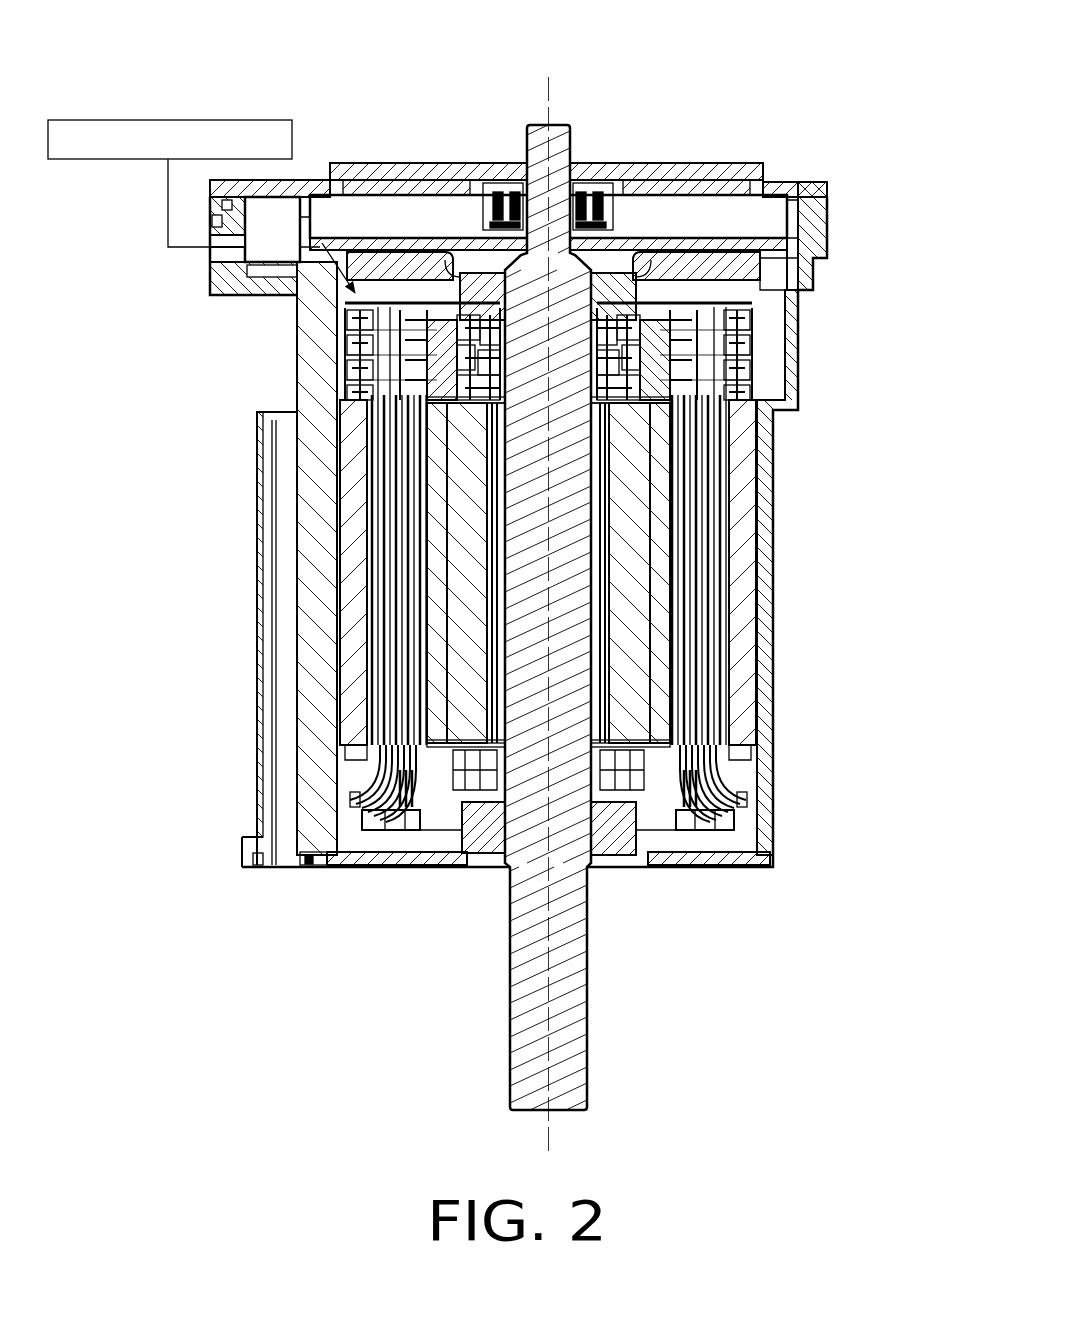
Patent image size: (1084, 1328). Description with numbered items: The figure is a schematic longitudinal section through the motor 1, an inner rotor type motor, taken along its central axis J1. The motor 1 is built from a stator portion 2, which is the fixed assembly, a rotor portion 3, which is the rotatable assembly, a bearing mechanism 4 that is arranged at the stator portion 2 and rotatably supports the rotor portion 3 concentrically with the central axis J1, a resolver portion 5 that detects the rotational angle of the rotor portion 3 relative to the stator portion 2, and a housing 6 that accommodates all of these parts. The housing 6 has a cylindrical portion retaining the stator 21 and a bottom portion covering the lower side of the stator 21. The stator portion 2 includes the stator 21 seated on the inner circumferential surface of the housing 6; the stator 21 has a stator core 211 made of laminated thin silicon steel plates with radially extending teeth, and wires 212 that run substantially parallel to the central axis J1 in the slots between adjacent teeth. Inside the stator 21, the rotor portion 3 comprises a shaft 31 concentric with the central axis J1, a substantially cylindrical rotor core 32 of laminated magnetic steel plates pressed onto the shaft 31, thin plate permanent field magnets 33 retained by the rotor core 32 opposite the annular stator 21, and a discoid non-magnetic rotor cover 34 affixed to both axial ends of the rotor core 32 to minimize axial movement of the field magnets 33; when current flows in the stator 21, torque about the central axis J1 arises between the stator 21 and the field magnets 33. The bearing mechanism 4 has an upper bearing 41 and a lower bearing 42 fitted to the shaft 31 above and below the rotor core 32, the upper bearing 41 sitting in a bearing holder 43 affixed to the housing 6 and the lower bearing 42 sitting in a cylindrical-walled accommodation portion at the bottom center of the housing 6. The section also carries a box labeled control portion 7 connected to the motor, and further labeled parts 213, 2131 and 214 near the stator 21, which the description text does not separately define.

The motor 1 is at (130, 40).
The stator portion 2 is at (888, 634).
The stator 21 is at (897, 542).
The stator core 211 is at (745, 490).
The wires 212 is at (377, 478).
The bearing holder 213 is at (880, 262).
The bearing 2131 is at (752, 320).
The lower bearing 214 is at (412, 835).
The rotor portion 3 is at (132, 690).
The shaft 31 is at (465, 592).
The rotor core 32 is at (437, 630).
The field magnets 33 is at (412, 702).
The rotor cover 34 is at (410, 442).
The bearing mechanism 4 is at (786, 75).
The upper bearing 41 is at (652, 305).
The lower bearing 42 is at (612, 835).
The bearing holder 43 is at (710, 283).
The resolver portion 5 is at (478, 177).
The housing 6 is at (296, 410).
The control portion 7 is at (193, 118).
The central axis J1 is at (550, 110).